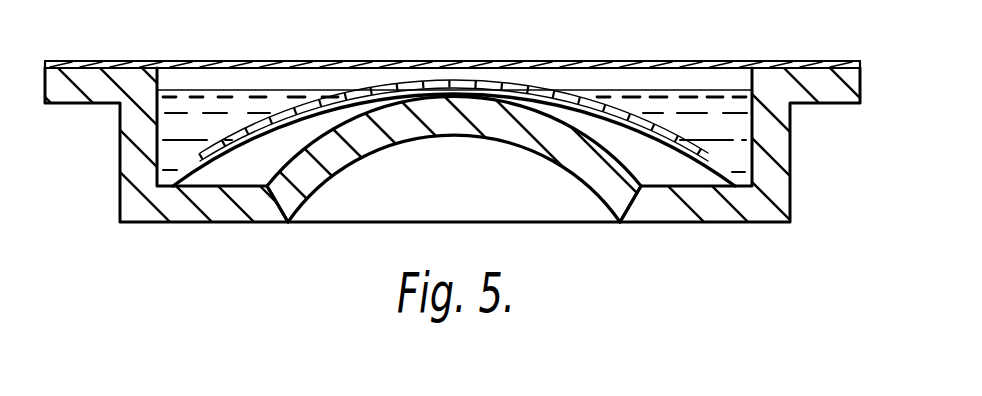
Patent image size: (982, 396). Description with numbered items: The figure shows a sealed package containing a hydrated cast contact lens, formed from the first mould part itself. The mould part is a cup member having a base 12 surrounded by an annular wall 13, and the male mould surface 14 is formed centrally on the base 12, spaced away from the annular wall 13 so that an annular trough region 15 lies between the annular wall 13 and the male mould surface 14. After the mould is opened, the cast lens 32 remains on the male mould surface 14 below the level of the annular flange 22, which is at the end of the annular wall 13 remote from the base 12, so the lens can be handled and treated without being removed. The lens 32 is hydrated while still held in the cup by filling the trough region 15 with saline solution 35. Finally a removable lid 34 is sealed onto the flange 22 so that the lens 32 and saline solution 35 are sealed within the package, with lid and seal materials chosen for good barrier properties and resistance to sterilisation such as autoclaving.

The base 12 is at (713, 207).
The annular wall 13 is at (135, 152).
The male mould surface 14 is at (435, 98).
The annular trough region 15 is at (730, 156).
The annular flange 22 is at (830, 83).
The cast lens 32 is at (453, 80).
The removable lid 34 is at (593, 64).
The saline solution 35 is at (190, 145).